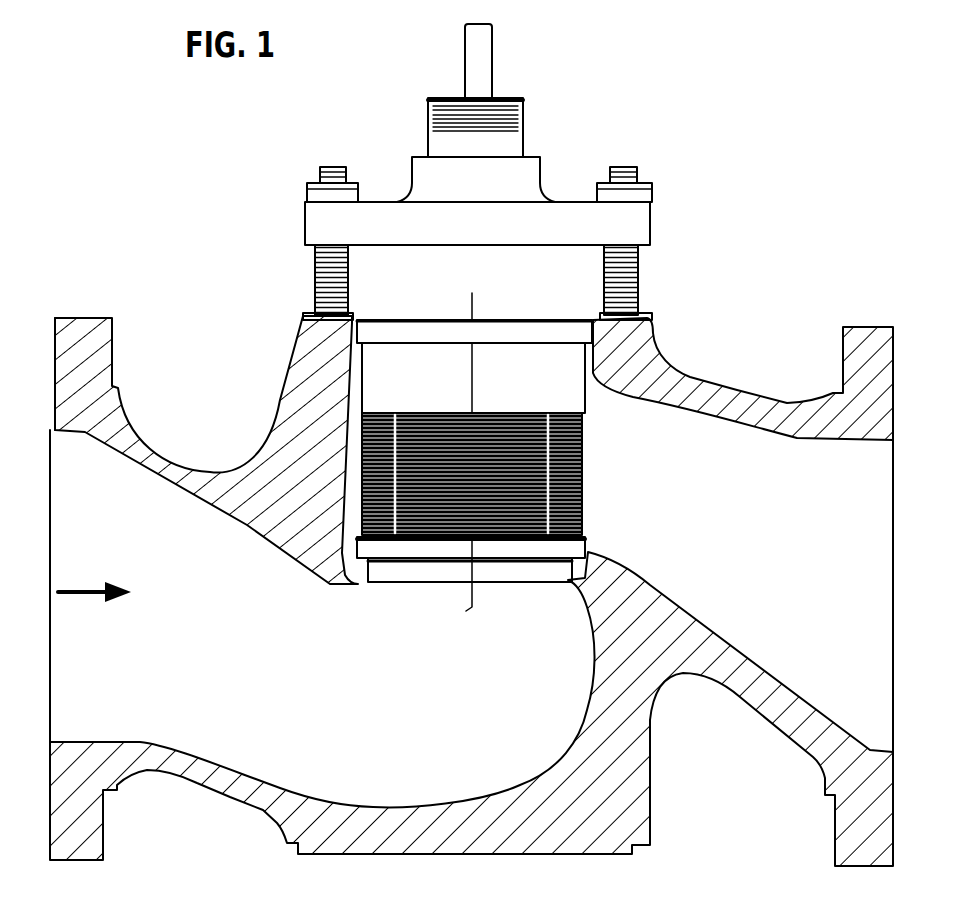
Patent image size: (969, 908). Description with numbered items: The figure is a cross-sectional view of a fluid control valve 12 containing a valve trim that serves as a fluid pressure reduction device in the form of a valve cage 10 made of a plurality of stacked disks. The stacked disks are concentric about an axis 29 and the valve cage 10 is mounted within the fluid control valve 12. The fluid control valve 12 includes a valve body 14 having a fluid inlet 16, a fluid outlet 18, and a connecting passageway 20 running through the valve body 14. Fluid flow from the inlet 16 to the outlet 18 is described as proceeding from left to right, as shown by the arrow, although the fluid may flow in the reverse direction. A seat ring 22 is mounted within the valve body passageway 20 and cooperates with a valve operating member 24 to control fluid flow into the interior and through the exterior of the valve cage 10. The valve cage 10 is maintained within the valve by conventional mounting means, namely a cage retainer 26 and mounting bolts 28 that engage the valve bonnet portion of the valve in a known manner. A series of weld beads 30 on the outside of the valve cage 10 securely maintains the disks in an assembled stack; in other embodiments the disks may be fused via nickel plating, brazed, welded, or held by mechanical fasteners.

The valve cage 10 is at (497, 405).
The fluid control valve 12 is at (752, 306).
The valve body 14 is at (132, 417).
The fluid inlet 16 is at (68, 580).
The fluid outlet 18 is at (891, 578).
The connecting passageway 20 is at (688, 530).
The seat ring 22 is at (413, 547).
The valve operating member 24 is at (487, 73).
The cage retainer 26 is at (496, 375).
The mounting bolts 28 is at (333, 167).
The axis 29 is at (472, 607).
The weld beads 30 is at (397, 410).